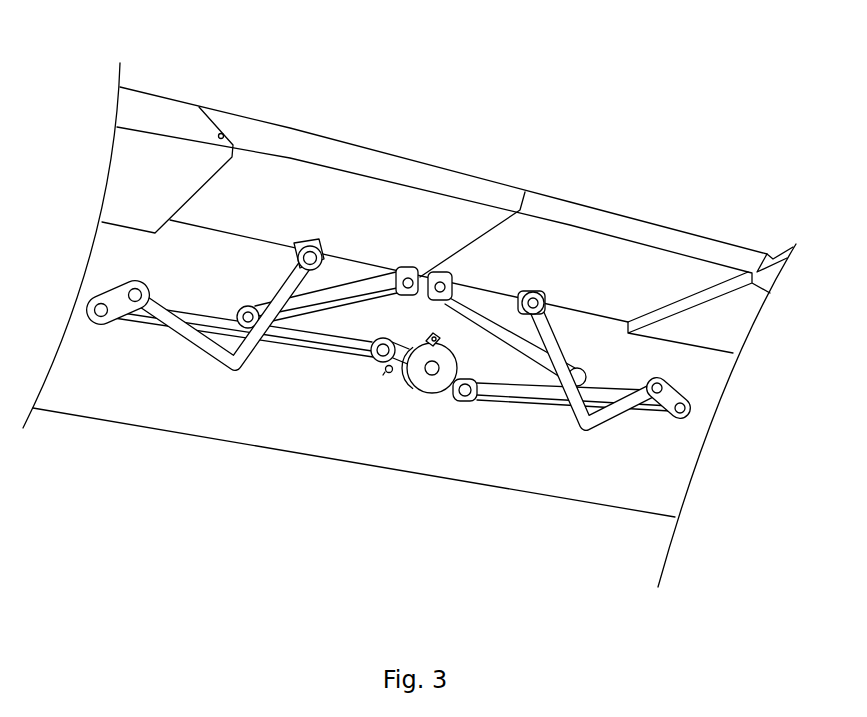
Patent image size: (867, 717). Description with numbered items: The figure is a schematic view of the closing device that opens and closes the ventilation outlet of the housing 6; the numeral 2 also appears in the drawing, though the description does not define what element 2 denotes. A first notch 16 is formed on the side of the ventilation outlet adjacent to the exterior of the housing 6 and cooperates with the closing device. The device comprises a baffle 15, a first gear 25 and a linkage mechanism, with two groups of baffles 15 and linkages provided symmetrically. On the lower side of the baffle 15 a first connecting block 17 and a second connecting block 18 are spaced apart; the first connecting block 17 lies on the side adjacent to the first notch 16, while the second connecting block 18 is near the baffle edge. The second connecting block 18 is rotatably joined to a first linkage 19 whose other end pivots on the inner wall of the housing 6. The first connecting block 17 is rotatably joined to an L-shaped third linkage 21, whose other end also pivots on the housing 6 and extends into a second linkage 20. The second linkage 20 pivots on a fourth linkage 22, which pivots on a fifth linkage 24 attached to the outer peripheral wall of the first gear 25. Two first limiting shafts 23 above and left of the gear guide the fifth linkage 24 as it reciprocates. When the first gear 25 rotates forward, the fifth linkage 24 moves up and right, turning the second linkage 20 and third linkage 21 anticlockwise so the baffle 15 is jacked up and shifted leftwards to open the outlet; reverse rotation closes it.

The vehicle body panel 2 is at (147, 177).
The housing 6 is at (533, 467).
The baffle 15 is at (252, 163).
The first notch 16 is at (222, 137).
The first connecting block 17 is at (317, 247).
The second connecting block 18 is at (408, 267).
The first linkage 19 is at (335, 298).
The second linkage 20 is at (95, 297).
The third linkage 21 is at (185, 343).
The fourth linkage 22 is at (297, 337).
The first limiting shafts 23 is at (385, 373).
The fifth linkage 24 is at (398, 367).
The first gear 25 is at (424, 380).